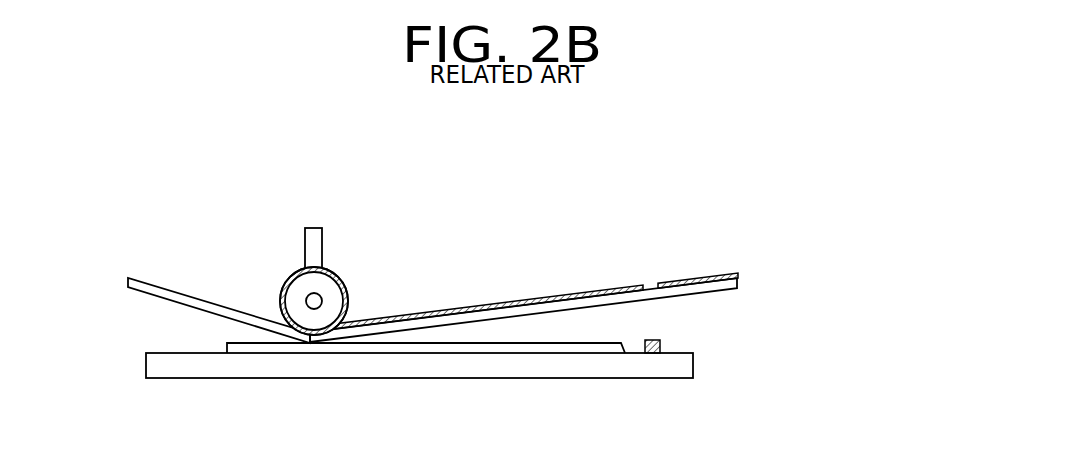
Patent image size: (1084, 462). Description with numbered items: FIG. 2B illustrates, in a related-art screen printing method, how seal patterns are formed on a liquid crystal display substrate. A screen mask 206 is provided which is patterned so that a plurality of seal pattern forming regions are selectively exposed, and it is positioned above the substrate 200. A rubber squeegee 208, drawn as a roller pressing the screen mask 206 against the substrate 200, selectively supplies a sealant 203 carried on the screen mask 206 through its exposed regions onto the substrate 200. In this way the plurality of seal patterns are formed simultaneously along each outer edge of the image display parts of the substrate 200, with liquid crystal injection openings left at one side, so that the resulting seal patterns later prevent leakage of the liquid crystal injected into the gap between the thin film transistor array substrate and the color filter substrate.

The substrate 200 is at (682, 372).
The sealant 203 is at (705, 273).
The screen mask 206 is at (738, 282).
The rubber squeegee 208 is at (327, 288).